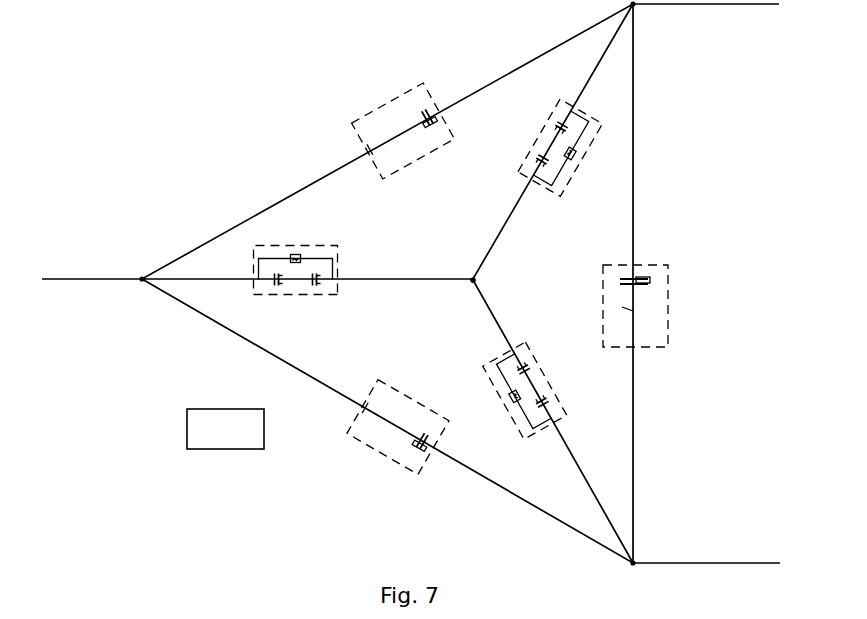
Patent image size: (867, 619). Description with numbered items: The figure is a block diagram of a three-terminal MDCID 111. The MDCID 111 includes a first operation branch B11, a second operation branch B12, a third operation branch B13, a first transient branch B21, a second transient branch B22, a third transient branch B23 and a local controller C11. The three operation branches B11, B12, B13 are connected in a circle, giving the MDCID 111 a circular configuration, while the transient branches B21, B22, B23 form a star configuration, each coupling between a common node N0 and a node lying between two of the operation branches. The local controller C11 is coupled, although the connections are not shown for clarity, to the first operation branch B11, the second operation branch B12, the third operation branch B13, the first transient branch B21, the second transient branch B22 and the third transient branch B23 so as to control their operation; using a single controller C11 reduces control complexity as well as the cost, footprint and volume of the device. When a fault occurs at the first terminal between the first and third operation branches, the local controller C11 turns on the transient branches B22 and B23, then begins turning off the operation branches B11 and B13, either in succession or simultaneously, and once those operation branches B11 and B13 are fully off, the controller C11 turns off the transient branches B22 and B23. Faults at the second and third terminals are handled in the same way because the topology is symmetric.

The three-terminal MDCID 111 is at (227, 104).
The common node N0 is at (470, 277).
The first operation branch B11 is at (390, 108).
The second operation branch B12 is at (607, 303).
The third operation branch B13 is at (380, 382).
The first transient branch B21 is at (545, 132).
The second transient branch B22 is at (340, 246).
The third transient branch B23 is at (485, 367).
The local controller C11 is at (202, 412).